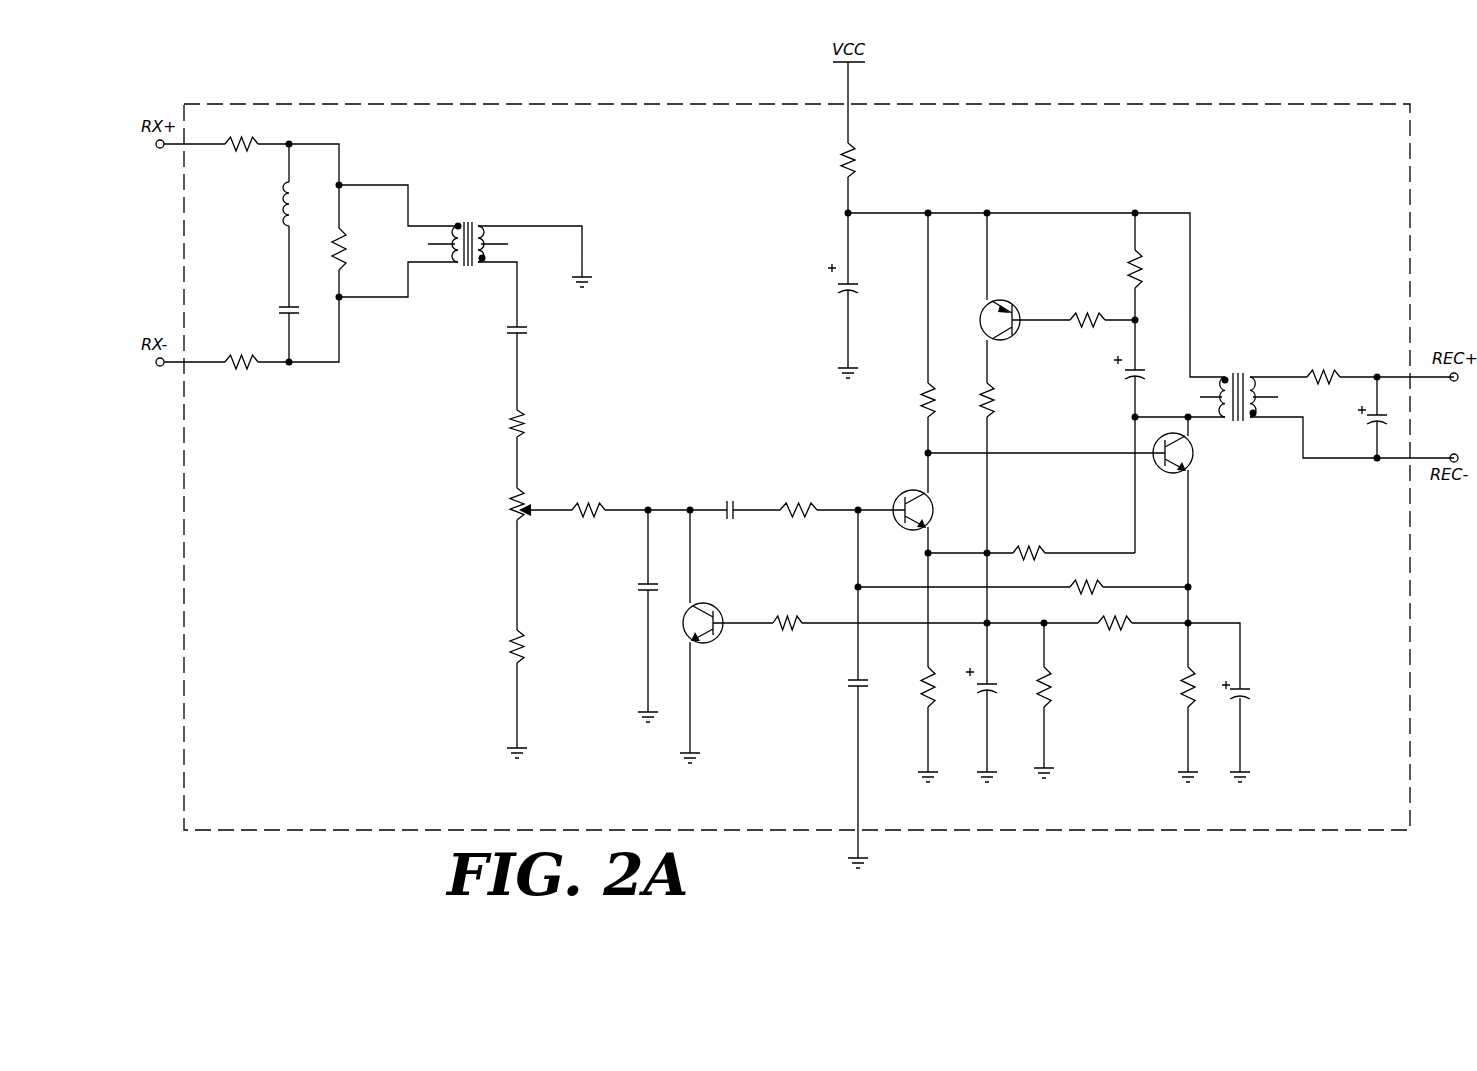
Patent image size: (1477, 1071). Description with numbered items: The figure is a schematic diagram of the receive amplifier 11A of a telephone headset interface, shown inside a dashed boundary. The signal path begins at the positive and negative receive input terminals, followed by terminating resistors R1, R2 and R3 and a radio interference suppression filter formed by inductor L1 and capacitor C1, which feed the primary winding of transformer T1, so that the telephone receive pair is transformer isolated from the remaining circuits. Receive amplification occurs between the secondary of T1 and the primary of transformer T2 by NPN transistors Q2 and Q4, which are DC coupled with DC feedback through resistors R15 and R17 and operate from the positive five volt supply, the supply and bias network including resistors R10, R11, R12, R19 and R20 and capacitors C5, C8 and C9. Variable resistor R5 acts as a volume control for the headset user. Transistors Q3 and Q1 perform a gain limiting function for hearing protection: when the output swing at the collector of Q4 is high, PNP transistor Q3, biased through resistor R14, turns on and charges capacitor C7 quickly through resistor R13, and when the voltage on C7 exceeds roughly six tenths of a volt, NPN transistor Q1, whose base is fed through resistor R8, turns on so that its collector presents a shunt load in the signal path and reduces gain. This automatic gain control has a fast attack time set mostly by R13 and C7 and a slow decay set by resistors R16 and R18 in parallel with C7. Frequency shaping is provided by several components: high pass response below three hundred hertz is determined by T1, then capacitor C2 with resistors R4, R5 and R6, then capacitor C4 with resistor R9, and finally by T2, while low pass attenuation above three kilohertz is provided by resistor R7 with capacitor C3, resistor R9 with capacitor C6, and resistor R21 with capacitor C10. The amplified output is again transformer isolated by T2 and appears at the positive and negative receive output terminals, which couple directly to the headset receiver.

The receive amplifier 11A is at (1177, 831).
The terminating resistor R1 is at (242, 140).
The terminating resistor R2 is at (239, 366).
The terminating resistor R3 is at (335, 239).
The resistor R4 is at (520, 416).
The variable resistor R5 is at (510, 497).
The resistor R6 is at (514, 642).
The resistor R7 is at (600, 504).
The resistor R8 is at (792, 617).
The resistor R9 is at (798, 511).
The resistor R10 is at (855, 153).
The resistor R11 is at (923, 392).
The resistor R12 is at (923, 677).
The resistor R13 is at (1003, 387).
The resistor R14 is at (1100, 316).
The resistor R15 is at (1076, 581).
The resistor R16 is at (1050, 674).
The resistor R17 is at (1024, 547).
The resistor R18 is at (1108, 617).
The resistor R19 is at (1142, 264).
The resistor R20 is at (1183, 677).
The resistor R21 is at (1332, 371).
The capacitor C1 is at (284, 306).
The capacitor C2 is at (522, 326).
The capacitor C3 is at (646, 581).
The capacitor C4 is at (723, 504).
The capacitor C5 is at (852, 276).
The capacitor C6 is at (852, 679).
The capacitor C7 is at (995, 670).
The capacitor C8 is at (1148, 358).
The capacitor C9 is at (1250, 674).
The capacitor C10 is at (1380, 408).
The inductor L1 is at (281, 203).
The transformer T1 is at (483, 216).
The transformer T2 is at (1255, 372).
The NPN transistor Q1 is at (700, 606).
The NPN transistor Q2 is at (918, 498).
The PNP transistor Q3 is at (1001, 342).
The NPN transistor Q4 is at (1162, 437).